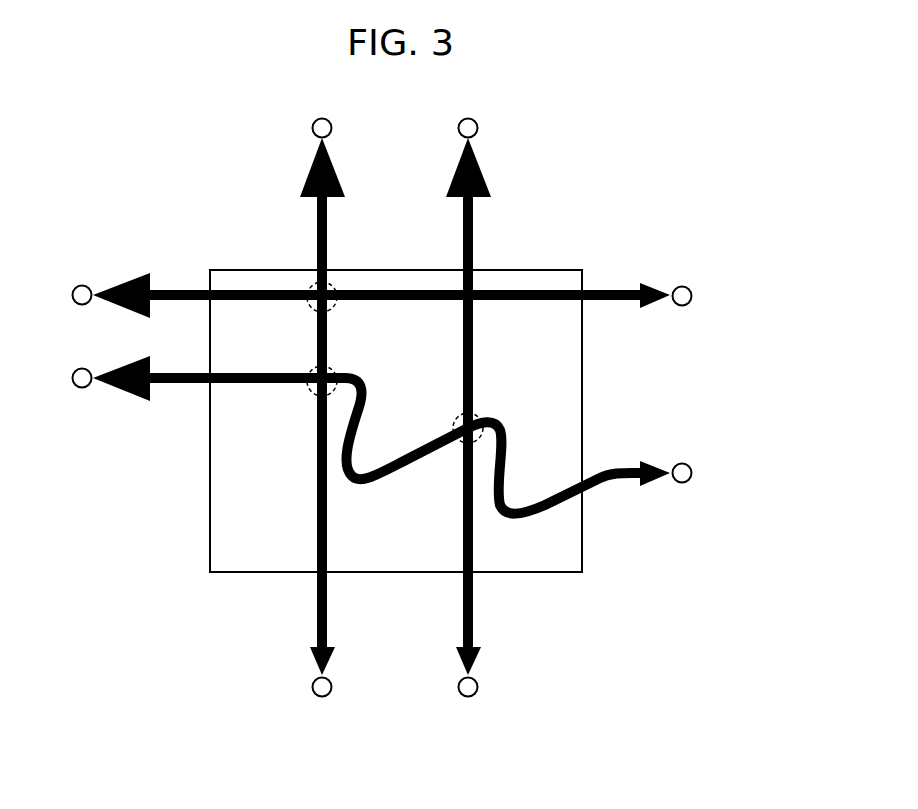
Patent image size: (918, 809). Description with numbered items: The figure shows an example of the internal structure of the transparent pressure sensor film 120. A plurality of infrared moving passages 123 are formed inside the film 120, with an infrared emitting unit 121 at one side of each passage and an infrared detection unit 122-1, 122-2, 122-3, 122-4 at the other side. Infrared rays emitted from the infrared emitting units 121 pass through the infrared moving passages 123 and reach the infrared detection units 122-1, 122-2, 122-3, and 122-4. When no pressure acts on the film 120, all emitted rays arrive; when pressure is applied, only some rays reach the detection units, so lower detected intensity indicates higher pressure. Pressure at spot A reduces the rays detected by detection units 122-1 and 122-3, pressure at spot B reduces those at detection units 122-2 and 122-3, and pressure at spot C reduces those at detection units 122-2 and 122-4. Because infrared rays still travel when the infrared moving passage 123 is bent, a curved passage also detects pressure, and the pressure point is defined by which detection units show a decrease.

The transparent pressure sensor film 120 is at (210, 510).
The infrared emitting unit 121 is at (311, 168).
The infrared detection unit 122-1 is at (692, 296).
The infrared detection unit 122-2 is at (692, 473).
The infrared detection unit 122-3 is at (312, 686).
The infrared detection unit 122-4 is at (478, 687).
The infrared moving passage 123 is at (547, 290).